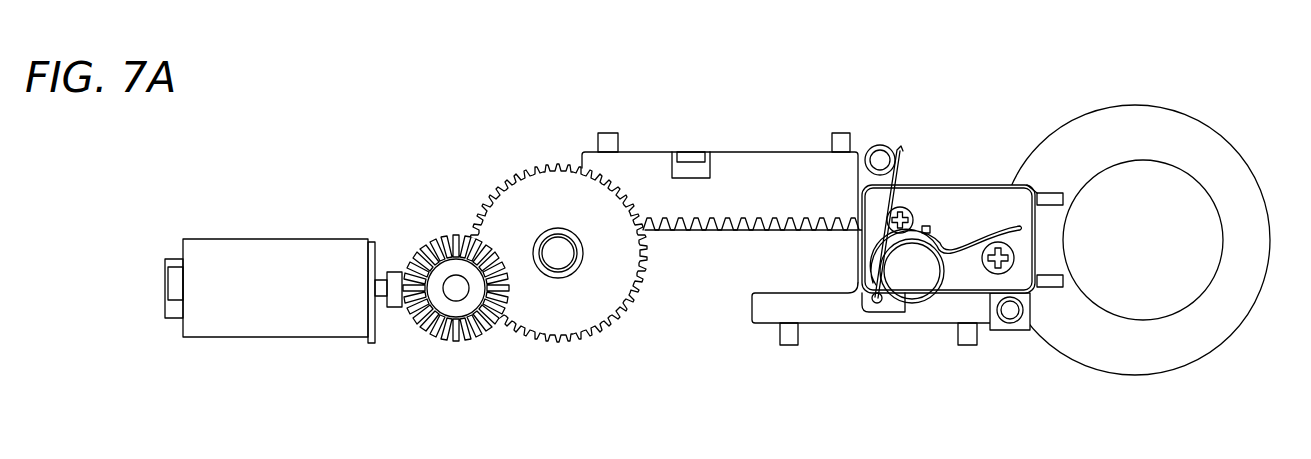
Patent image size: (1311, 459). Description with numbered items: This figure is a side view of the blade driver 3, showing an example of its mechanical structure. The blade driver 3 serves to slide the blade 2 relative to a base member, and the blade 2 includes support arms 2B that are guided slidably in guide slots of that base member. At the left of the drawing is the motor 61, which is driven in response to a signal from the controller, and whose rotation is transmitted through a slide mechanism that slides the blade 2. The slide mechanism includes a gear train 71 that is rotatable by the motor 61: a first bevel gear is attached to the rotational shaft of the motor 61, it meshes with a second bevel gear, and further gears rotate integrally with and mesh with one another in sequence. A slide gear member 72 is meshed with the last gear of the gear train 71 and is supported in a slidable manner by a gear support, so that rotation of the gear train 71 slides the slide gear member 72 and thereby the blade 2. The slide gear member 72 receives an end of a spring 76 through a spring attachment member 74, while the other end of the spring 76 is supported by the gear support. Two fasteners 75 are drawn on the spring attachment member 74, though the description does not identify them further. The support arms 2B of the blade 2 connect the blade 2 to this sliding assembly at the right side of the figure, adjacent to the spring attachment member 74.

The blade 2 is at (1157, 110).
The support arms 2B is at (1040, 190).
The blade driver 3 is at (455, 103).
The motor 61 is at (275, 243).
The gear train 71 is at (385, 372).
The slide gear member 72 is at (763, 324).
The spring attachment member 74 is at (958, 207).
The screw 75 is at (903, 207).
The spring 76 is at (887, 302).